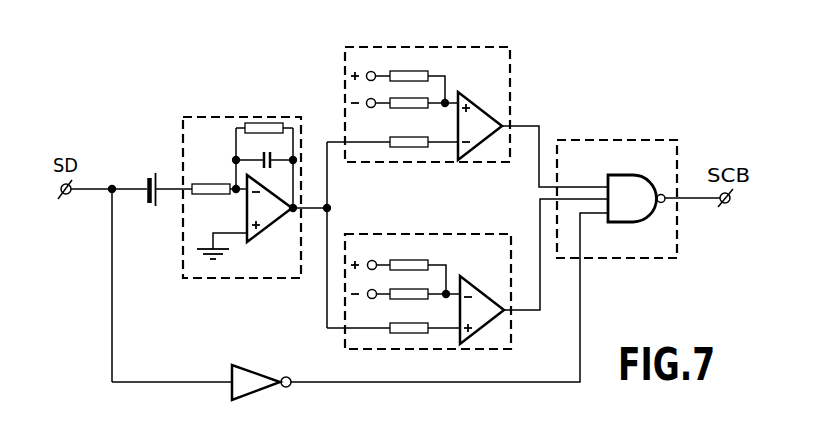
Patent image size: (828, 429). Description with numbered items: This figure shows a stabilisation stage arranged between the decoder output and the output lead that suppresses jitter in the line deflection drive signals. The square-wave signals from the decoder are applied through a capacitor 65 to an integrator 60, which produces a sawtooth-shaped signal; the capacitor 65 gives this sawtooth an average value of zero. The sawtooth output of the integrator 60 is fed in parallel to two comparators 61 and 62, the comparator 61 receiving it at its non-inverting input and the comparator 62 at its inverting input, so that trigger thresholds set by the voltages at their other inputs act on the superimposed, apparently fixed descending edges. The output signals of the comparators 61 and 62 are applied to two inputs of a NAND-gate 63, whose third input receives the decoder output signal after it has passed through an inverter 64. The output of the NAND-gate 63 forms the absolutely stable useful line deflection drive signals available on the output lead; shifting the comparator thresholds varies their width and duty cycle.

The integrator 60 is at (230, 116).
The comparator 61 is at (345, 343).
The comparator 62 is at (512, 73).
The NAND-gate 63 is at (602, 140).
The inverter 64 is at (229, 375).
The capacitor 65 is at (151, 171).